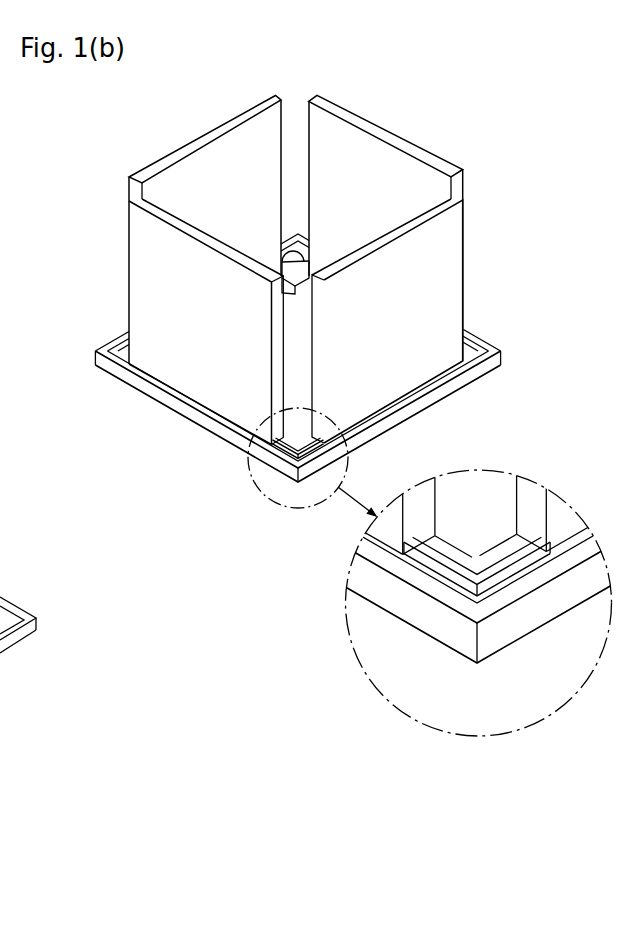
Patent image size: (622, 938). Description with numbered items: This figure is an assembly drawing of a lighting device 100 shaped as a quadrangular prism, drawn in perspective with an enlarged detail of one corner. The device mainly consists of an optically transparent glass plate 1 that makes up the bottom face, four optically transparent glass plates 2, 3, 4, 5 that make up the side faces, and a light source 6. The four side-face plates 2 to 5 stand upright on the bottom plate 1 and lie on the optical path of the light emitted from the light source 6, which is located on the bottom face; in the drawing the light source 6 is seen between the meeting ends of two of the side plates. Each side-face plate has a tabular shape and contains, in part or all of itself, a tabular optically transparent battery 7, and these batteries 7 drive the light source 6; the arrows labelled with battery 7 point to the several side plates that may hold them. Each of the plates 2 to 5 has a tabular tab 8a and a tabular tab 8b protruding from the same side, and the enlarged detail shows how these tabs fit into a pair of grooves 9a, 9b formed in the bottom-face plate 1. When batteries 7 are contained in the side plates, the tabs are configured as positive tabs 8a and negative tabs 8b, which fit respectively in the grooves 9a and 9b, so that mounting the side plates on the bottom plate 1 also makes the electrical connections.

The lighting device 100 is at (314, 73).
The optically transparent glass plate 1 is at (418, 407).
The optically transparent glass plate 2 is at (398, 143).
The optically transparent glass plate 3 is at (202, 143).
The optically transparent glass plate 4 is at (200, 237).
The optically transparent glass plate 5 is at (467, 370).
The light source 6 is at (293, 300).
The optically transparent battery 7 is at (311, 323).
The tabular tab 8a is at (410, 565).
The tabular tab 8b is at (430, 553).
The groove 9a is at (450, 568).
The groove 9b is at (475, 597).